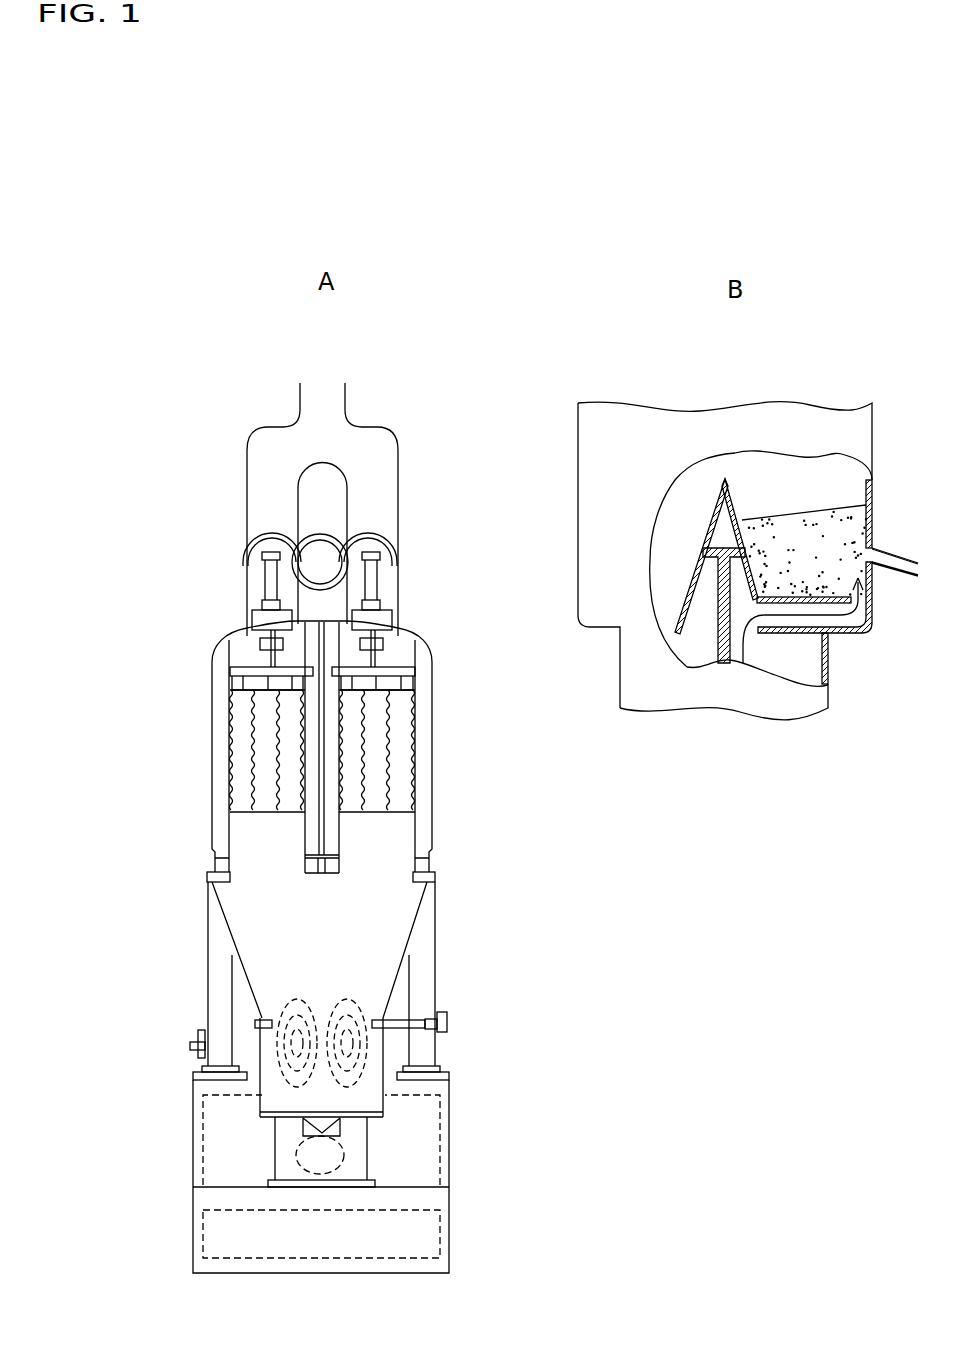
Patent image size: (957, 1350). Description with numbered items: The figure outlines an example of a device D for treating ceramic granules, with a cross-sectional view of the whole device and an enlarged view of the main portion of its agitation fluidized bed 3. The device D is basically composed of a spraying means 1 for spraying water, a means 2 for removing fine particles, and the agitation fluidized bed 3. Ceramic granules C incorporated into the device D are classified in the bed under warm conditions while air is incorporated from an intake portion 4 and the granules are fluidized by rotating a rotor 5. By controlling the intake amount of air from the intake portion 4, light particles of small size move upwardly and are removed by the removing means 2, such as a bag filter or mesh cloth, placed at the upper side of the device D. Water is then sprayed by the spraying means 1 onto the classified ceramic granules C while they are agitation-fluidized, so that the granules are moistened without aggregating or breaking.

In FIG. 1A, the device for treating the ceramic granule D is at (388, 430).
In FIG. 1A, the means for removing fine particles 2 is at (403, 752).
In FIG. 1A, the agitation fluidized bed 3 is at (367, 1070).
In FIG. 1A, the intake portion 4 is at (347, 1140).
In FIG. 1B, the rotor 5 is at (733, 497).
In FIG. 1B, the ceramic granules C is at (843, 525).
In FIG. 1B, the spraying means 1 is at (892, 572).